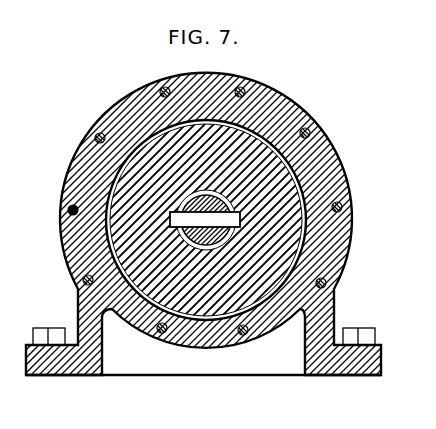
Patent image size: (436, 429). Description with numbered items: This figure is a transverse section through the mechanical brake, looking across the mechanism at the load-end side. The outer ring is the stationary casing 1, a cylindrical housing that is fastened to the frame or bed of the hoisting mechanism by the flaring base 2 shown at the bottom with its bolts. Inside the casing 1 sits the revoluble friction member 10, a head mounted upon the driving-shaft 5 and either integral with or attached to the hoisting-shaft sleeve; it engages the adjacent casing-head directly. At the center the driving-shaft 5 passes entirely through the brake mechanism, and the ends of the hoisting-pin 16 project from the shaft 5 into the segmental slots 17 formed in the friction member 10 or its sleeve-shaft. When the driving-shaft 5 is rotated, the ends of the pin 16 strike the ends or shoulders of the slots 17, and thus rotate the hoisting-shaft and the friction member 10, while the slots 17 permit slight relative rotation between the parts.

The stationary casing 1 is at (268, 100).
The flaring base 2 is at (67, 362).
The driving-shaft 5 is at (262, 140).
The revoluble friction member 10 is at (127, 152).
The hoisting-pin 16 is at (237, 197).
The segmental slots 17 is at (173, 203).